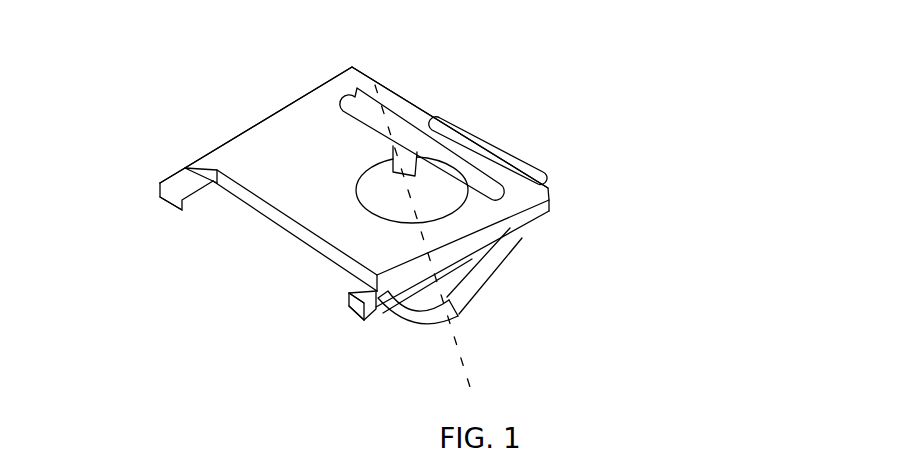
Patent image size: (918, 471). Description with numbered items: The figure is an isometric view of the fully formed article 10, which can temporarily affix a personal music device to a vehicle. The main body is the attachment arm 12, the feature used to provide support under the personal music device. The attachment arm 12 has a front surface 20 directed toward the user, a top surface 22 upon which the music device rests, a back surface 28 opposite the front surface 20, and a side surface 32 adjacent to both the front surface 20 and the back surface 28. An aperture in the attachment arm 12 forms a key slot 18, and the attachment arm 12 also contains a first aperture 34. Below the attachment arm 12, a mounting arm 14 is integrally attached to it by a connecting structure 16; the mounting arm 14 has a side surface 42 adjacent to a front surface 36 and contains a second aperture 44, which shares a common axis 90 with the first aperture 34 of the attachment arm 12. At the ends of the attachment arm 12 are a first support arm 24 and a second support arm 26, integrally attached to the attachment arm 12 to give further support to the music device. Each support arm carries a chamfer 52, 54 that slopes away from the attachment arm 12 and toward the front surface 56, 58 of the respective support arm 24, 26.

The article 10 is at (122, 85).
The attachment arm 12 is at (228, 113).
The mounting arm 14 is at (506, 267).
The connecting structure 16 is at (531, 171).
The key slot 18 is at (353, 110).
The front surface 20 is at (289, 228).
The top surface 22 is at (289, 148).
The first support arm 24 is at (152, 189).
The second support arm 26 is at (346, 299).
The back surface 28 is at (421, 111).
The side surface 32 is at (543, 204).
The first aperture 34 is at (432, 181).
The front surface 36 is at (408, 326).
The side surface 42 is at (498, 248).
The second aperture 44 is at (456, 296).
The chamfer 52 is at (176, 189).
The chamfer 54 is at (345, 299).
The front surface 56 is at (165, 205).
The front surface 58 is at (352, 317).
The common axis 90 is at (474, 360).